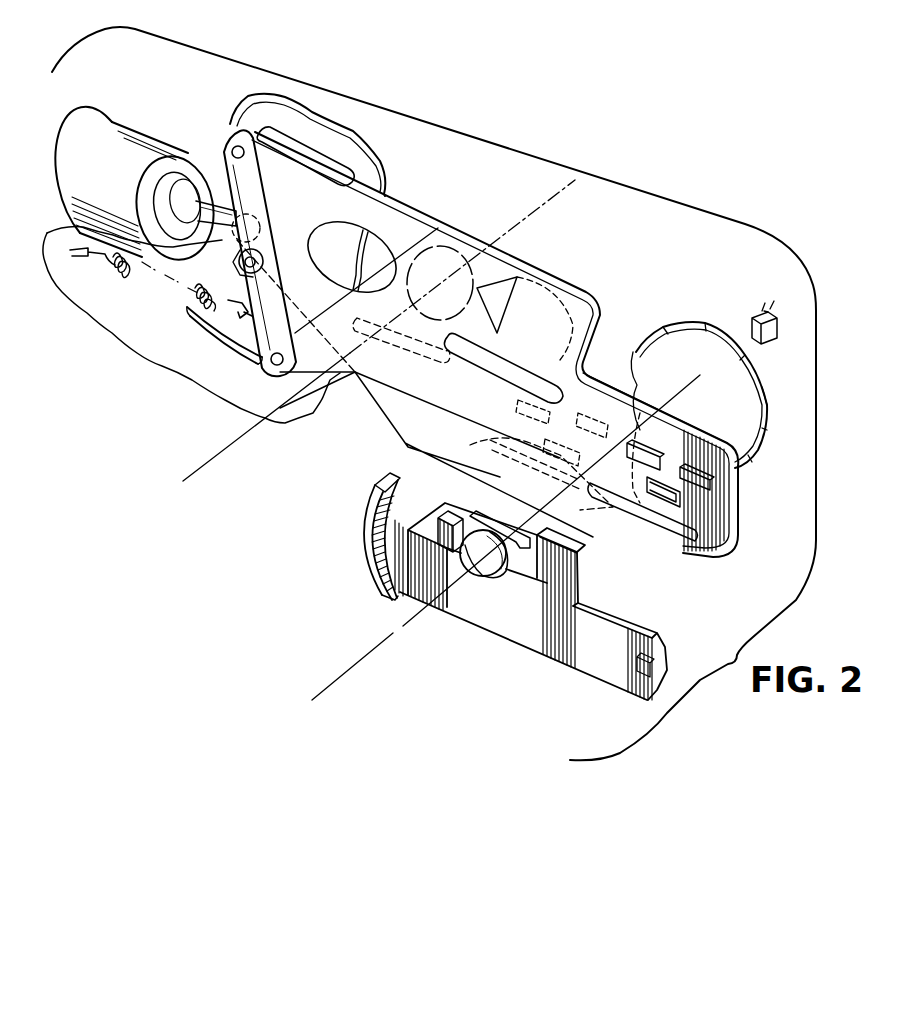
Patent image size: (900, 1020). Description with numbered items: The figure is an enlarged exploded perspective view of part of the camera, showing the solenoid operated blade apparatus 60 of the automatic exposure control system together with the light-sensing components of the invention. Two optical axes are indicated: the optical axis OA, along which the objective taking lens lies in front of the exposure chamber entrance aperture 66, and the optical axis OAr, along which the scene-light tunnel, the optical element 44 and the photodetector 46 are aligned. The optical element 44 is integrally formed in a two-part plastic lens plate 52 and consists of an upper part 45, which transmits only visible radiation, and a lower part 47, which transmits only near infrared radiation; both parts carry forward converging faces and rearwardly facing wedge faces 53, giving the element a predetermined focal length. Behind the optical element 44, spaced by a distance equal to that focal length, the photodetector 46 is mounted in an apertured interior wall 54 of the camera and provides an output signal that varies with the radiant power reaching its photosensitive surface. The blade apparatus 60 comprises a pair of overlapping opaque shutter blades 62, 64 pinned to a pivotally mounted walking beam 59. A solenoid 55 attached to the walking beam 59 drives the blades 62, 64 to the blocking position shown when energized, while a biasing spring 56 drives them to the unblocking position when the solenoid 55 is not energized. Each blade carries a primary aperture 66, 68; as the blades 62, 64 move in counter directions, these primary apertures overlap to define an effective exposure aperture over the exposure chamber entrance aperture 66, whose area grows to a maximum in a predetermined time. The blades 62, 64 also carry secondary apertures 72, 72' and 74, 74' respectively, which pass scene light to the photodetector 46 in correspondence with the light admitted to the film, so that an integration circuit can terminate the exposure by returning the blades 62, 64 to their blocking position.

The optical element 44 is at (487, 582).
The upper part 45 is at (480, 540).
The photodetector 46 is at (777, 322).
The lower part 47 is at (507, 568).
The lens plate 52 is at (597, 591).
The wedge faces 53 is at (505, 528).
The interior wall 54 is at (386, 168).
The solenoid 55 is at (134, 150).
The biasing spring 56 is at (120, 270).
The walking beam 59 is at (254, 333).
The blade apparatus 60 is at (555, 258).
The shutter blade 62 is at (594, 296).
The shutter blade 64 is at (416, 212).
The primary aperture / exposure chamber entrance aperture 66 is at (443, 250).
The primary aperture 68 is at (352, 257).
The secondary aperture 72 is at (656, 484).
The secondary aperture 72' is at (667, 524).
The secondary aperture 74 is at (549, 435).
The secondary aperture 74' is at (541, 465).
The optical axis OA is at (369, 339).
The optical axis OAr is at (496, 549).